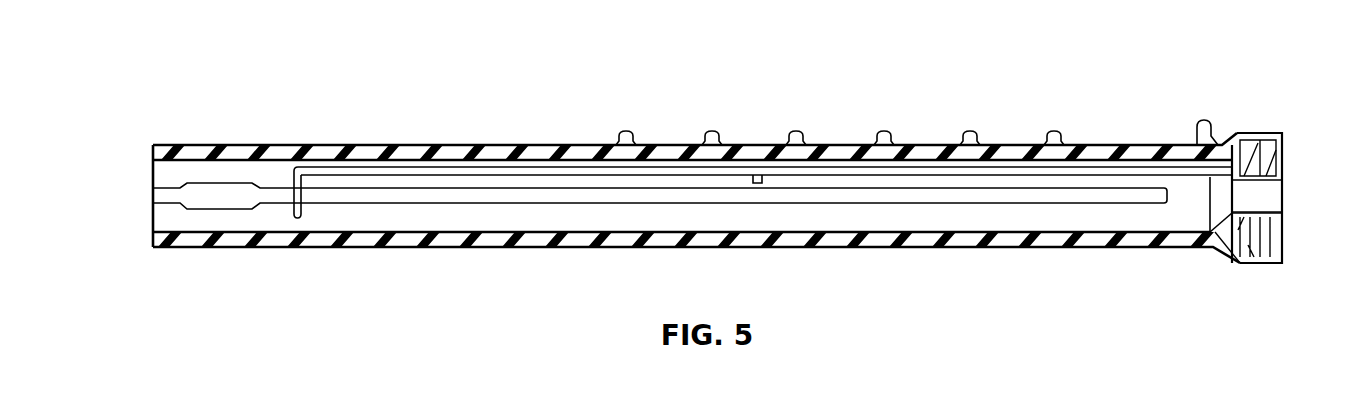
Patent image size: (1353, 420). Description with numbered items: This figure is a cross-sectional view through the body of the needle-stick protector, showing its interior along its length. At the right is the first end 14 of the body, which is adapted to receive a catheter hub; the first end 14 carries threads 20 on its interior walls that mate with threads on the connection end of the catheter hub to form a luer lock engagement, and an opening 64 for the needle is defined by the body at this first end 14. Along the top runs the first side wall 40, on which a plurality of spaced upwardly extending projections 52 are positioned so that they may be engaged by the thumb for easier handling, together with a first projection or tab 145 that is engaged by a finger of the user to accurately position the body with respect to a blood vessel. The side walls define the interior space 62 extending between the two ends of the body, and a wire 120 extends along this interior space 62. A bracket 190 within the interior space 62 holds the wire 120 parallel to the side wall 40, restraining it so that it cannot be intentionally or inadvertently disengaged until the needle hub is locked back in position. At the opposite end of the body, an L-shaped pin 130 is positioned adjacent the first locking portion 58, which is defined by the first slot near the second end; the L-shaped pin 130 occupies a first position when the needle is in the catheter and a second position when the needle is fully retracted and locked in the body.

The first end 14 is at (1262, 133).
The threads 20 is at (1270, 238).
The first side wall 40 is at (1110, 145).
The projections 52 is at (883, 134).
The first locking portion 58 is at (212, 190).
The interior space 62 is at (356, 215).
The opening for the needle 64 is at (1268, 197).
The wire 120 is at (662, 172).
The L-shaped pin 130 is at (298, 220).
The first projection or tab 145 is at (1205, 120).
The bracket 190 is at (752, 166).